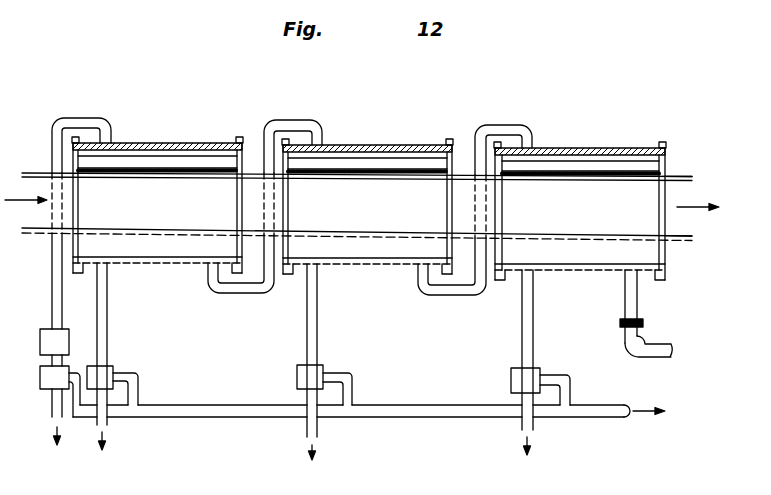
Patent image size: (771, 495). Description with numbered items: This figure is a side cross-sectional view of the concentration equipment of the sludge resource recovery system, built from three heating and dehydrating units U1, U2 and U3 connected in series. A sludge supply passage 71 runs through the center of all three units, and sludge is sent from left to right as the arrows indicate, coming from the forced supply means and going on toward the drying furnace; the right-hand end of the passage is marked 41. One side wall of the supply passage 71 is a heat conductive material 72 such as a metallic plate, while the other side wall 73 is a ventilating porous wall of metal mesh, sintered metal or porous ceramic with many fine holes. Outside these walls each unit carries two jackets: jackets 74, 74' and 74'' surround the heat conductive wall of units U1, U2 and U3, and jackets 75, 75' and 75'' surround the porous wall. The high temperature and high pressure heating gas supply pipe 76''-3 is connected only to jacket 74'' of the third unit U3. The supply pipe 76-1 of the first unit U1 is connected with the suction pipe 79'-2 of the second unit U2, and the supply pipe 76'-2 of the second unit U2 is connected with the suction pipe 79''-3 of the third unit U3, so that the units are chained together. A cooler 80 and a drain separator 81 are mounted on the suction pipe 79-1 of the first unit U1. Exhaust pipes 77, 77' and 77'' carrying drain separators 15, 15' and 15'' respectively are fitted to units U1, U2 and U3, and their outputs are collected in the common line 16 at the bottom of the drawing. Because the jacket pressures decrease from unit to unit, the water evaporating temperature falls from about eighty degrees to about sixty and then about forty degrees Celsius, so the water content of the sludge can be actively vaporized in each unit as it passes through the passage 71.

The sludge supply passage 71 is at (37, 181).
The heat conductive material 72 is at (213, 229).
The ventilating porous wall 73 is at (150, 179).
The jacket 74 is at (157, 229).
The jacket 74' is at (367, 219).
The jacket 74'' is at (580, 227).
The jacket 75 is at (157, 122).
The jacket 75' is at (367, 136).
The jacket 75'' is at (580, 134).
The first heating and dehydrating unit U1 is at (157, 204).
The second heating and dehydrating unit U2 is at (367, 206).
The third heating and dehydrating unit U3 is at (580, 210).
The suction pipe 79-1 is at (83, 117).
The suction pipe 79'-2 is at (323, 159).
The suction pipe 79''-3 is at (533, 170).
The supply pipe 76-1 is at (217, 294).
The supply pipe 76'-2 is at (452, 298).
The heating gas supply pipe 76''-3 is at (668, 313).
The exhaust pipe 77 is at (127, 356).
The exhaust pipe 77' is at (339, 362).
The exhaust pipe 77'' is at (557, 362).
The drain separator 15 is at (129, 381).
The drain separator 15' is at (345, 378).
The drain separator 15'' is at (558, 379).
The collecting manifold 16 is at (612, 404).
The cooler 80 is at (42, 335).
The drain separator 81 is at (40, 381).
The outlet pipe 41 is at (677, 192).